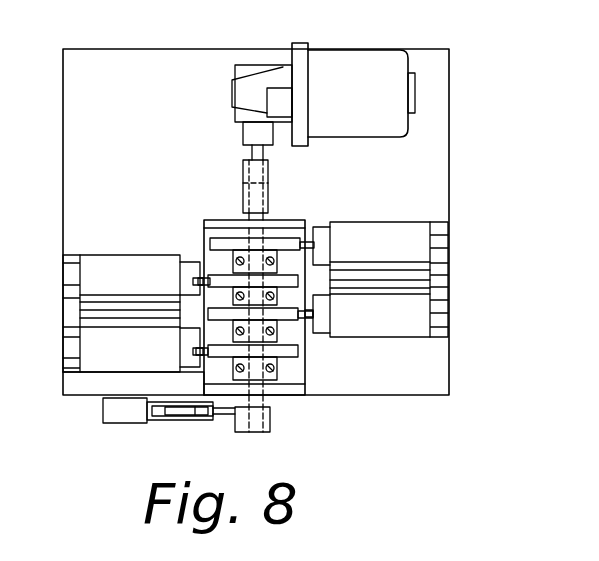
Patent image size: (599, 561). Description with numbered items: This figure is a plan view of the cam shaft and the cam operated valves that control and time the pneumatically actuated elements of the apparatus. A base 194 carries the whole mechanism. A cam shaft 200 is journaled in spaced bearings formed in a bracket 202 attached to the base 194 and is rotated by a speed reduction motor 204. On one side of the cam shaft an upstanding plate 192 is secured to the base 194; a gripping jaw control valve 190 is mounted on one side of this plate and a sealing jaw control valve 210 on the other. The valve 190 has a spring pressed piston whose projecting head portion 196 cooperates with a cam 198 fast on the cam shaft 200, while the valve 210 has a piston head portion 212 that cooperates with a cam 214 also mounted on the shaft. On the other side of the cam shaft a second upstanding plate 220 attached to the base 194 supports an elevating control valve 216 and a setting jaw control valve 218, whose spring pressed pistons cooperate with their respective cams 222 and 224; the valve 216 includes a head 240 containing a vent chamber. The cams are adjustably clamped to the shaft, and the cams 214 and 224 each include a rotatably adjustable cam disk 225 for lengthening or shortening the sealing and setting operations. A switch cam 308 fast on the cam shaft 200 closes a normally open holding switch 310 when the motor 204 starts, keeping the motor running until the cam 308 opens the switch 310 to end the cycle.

The base 194 is at (63, 172).
The speed reduction motor 204 is at (368, 137).
The cam 224 is at (228, 273).
The cam 198 is at (305, 373).
The rotatably adjustable cam disk 225 is at (280, 238).
The cam 222 is at (302, 333).
The projecting head portion 196 is at (198, 354).
The sealing jaw control valve 210 is at (115, 255).
The head portion 212 is at (200, 277).
The cam 214 is at (212, 290).
The upstanding plate 192 is at (90, 308).
The gripping jaw control valve 190 is at (98, 372).
The bracket 202 is at (200, 373).
The setting jaw control valve 218 is at (368, 223).
The upstanding plate 220 is at (425, 280).
The elevating control valve 216 is at (378, 333).
The head 240 is at (310, 311).
The holding switch 310 is at (135, 421).
The switch cam 308 is at (225, 414).
The cam shaft 200 is at (252, 432).